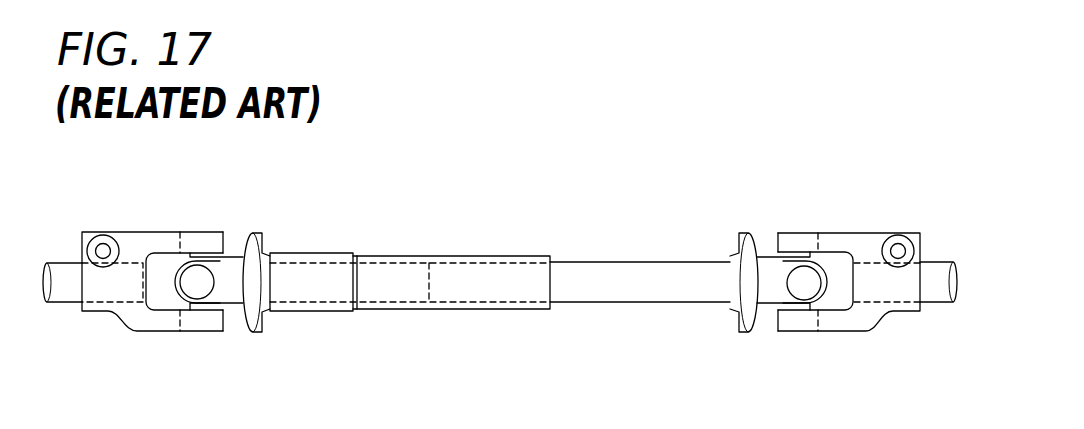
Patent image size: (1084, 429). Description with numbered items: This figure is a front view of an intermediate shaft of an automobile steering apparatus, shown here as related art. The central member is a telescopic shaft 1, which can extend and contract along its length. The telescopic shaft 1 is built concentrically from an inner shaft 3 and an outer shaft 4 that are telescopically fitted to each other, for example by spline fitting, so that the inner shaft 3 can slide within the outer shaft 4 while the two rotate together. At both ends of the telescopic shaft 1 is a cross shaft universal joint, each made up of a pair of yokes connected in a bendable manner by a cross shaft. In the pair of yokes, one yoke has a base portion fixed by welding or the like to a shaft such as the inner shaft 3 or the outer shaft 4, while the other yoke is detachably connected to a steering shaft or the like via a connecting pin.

The telescopic shaft 1 is at (538, 216).
The inner shaft 3 is at (637, 292).
The outer shaft 4 is at (470, 290).